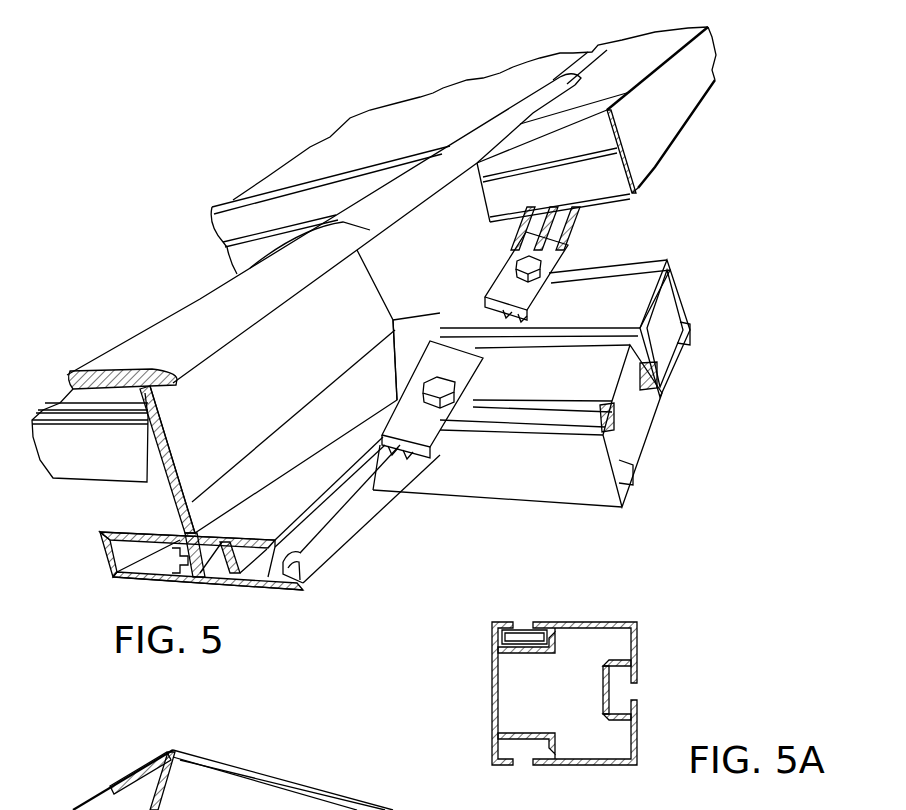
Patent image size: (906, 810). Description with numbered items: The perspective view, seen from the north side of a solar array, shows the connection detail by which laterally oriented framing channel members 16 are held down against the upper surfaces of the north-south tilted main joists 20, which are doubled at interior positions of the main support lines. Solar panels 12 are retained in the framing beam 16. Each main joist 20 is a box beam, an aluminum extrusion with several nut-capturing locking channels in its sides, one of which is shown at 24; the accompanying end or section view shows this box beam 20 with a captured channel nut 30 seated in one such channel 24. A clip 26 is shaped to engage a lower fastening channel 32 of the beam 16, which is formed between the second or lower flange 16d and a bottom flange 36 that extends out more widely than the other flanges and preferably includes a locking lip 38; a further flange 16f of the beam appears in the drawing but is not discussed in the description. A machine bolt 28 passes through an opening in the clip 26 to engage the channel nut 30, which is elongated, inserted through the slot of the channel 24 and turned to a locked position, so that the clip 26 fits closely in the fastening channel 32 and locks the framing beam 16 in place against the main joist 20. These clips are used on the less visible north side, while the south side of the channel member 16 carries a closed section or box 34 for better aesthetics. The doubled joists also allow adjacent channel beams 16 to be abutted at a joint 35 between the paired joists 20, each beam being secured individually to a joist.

In FIG. 5, the solar panels 12 is at (213, 208).
In FIG. 5, the framing channel member 16 is at (152, 347).
In FIG. 5, the second or lower flange 16d is at (260, 492).
In FIG. 5, the panel bottom flange 16f is at (143, 517).
In FIG. 5, the main joist 20 is at (640, 265).
In FIG. 5A, the main joist 20 is at (474, 706).
In FIG. 5, the nut-capturing channel 24 is at (593, 283).
In FIG. 5A, the nut-capturing channel 24 is at (524, 621).
In FIG. 5, the clip 26 is at (510, 283).
In FIG. 5, the machine bolt 28 is at (530, 260).
In FIG. 5A, the channel nut 30 is at (503, 636).
In FIG. 5, the fastening channel 32 is at (335, 487).
In FIG. 5, the closed section or box 34 is at (103, 553).
In FIG. 5, the joint 35 is at (352, 224).
In FIG. 5, the bottom flange 36 is at (352, 525).
In FIG. 5, the locking lip 38 is at (277, 578).